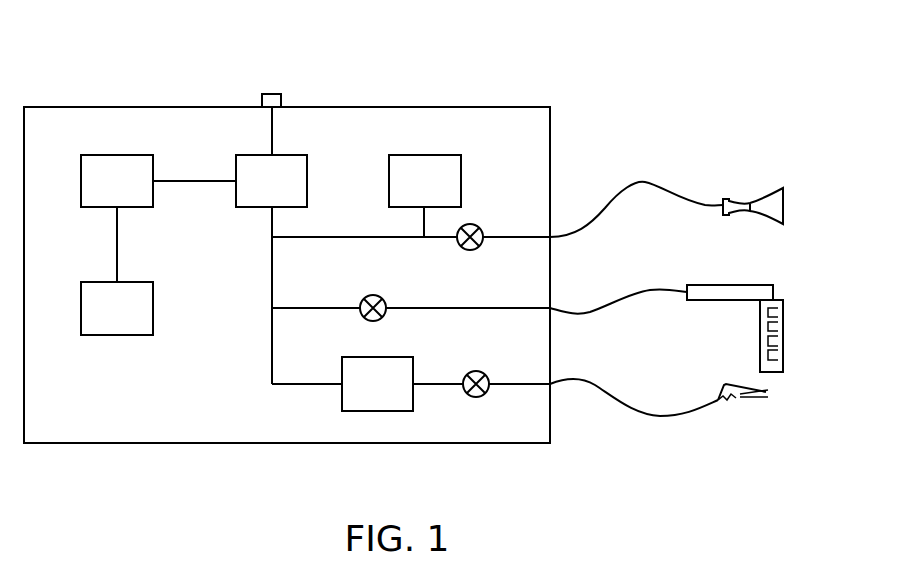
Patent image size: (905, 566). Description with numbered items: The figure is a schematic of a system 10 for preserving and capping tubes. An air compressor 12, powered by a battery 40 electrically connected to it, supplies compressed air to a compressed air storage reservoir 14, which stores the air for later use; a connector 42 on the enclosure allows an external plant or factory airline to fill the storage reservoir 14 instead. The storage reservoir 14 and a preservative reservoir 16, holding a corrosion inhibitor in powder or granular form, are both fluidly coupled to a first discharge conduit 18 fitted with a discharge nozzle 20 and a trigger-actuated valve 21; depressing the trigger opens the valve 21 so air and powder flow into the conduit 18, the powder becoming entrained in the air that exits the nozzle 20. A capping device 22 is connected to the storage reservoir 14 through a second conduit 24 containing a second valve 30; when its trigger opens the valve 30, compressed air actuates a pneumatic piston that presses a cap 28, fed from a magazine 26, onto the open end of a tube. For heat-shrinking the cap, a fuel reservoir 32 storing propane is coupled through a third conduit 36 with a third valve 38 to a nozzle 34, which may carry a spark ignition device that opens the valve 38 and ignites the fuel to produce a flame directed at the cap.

The system 10 is at (573, 47).
The air compressor 12 is at (158, 218).
The compressed air storage reservoir 14 is at (393, 245).
The preservative reservoir 16 is at (425, 196).
The first discharge conduit 18 is at (637, 182).
The discharge nozzle 20 is at (762, 196).
The trigger-actuated valve 21 is at (479, 226).
The capping device 22 is at (733, 300).
The second conduit 24 is at (611, 300).
The magazine 26 is at (772, 372).
The caps 28 is at (778, 328).
The second valve 30 is at (382, 298).
The fuel reservoir 32 is at (377, 384).
The nozzle 34 is at (727, 415).
The third conduit 36 is at (602, 390).
The third valve 38 is at (478, 372).
The battery 40 is at (117, 308).
The connector 42 is at (272, 94).